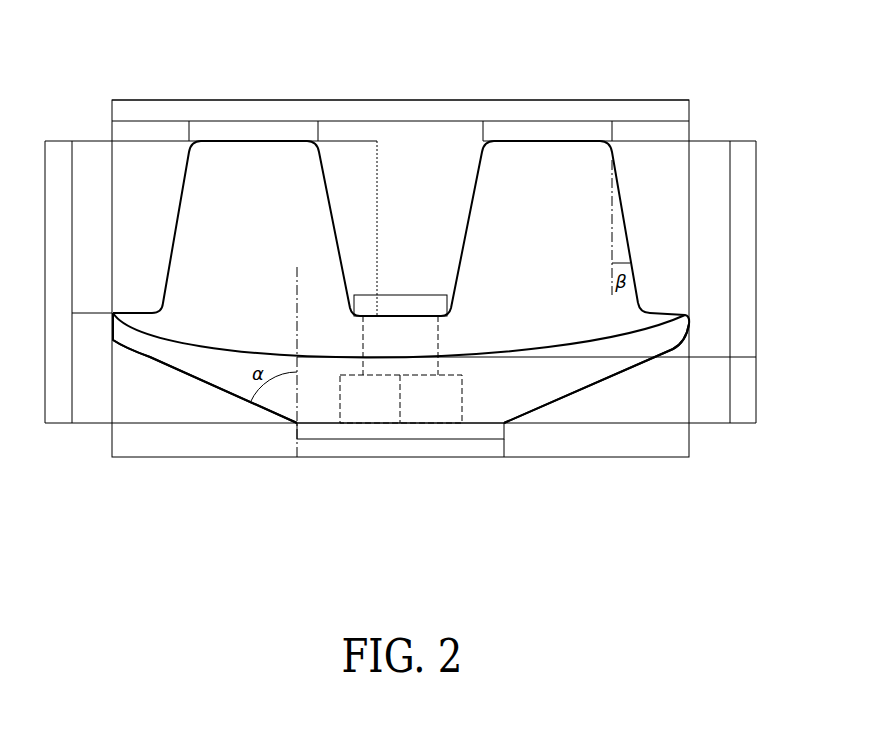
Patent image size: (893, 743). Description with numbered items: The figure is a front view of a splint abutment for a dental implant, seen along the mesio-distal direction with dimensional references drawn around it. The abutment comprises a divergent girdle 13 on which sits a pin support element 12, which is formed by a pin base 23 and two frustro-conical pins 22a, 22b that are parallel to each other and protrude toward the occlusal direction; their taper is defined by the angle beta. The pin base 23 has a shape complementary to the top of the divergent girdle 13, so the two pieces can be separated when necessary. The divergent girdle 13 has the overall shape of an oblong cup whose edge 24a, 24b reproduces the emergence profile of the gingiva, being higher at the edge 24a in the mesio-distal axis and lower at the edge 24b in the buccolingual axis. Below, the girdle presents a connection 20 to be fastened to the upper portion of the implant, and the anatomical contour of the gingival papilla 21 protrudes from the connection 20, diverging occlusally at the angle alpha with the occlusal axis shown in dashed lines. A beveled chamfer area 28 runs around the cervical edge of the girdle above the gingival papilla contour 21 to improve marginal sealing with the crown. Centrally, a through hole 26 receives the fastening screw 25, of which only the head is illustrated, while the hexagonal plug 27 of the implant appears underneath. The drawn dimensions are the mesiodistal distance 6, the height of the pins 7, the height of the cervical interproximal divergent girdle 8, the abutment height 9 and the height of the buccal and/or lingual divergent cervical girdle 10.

The mesiodistal distance 6 is at (400, 97).
The height of the pins 7 is at (78, 227).
The height of the cervical interproximal divergent girdle 8 is at (67, 368).
The abutment height 9 is at (752, 249).
The height of the buccal and/or lingual divergent cervical girdle 10 is at (643, 390).
The pin support element 12 is at (643, 323).
The divergent girdle 13 is at (632, 357).
The connection 20 is at (330, 423).
The anatomical contour of the gingival papilla 21 is at (203, 383).
The pin 22a is at (243, 162).
The pin 22b is at (536, 160).
The pin base 23 is at (487, 325).
The edge 24a is at (112, 313).
The edge 24b is at (313, 357).
The fastening screw 25 is at (418, 303).
The through hole 26 is at (437, 347).
The hexagonal plug 27 is at (428, 405).
The chamfer area 28 is at (112, 340).